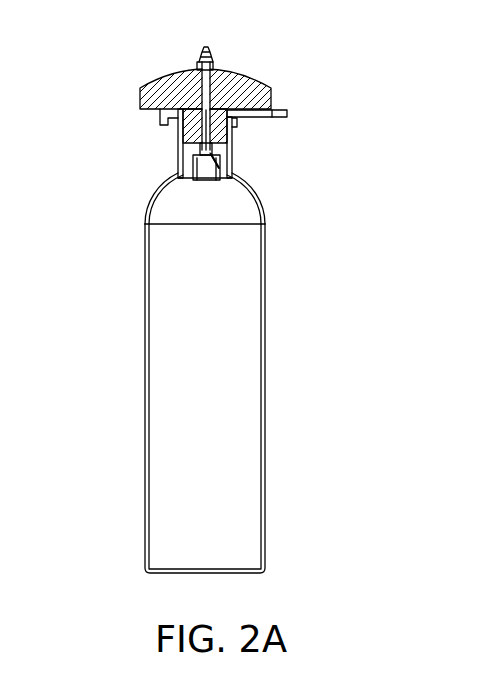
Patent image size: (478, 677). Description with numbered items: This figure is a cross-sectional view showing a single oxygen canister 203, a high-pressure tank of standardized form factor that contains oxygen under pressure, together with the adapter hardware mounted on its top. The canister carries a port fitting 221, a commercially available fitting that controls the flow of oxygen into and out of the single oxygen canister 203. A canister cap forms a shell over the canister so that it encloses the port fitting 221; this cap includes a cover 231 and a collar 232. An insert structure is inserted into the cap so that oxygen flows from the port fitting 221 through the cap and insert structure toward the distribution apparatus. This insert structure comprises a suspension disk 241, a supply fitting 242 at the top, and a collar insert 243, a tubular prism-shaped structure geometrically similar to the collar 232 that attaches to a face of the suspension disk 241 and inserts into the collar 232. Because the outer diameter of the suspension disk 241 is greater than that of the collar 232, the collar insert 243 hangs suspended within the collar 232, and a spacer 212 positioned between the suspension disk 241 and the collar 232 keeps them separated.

The single oxygen canister 203 is at (243, 410).
The spacer 212 is at (285, 112).
The port fitting 221 is at (247, 177).
The cover 231 is at (147, 200).
The collar 232 is at (232, 152).
The suspension disk 241 is at (257, 83).
The supply fitting 242 is at (207, 53).
The collar insert 243 is at (183, 146).